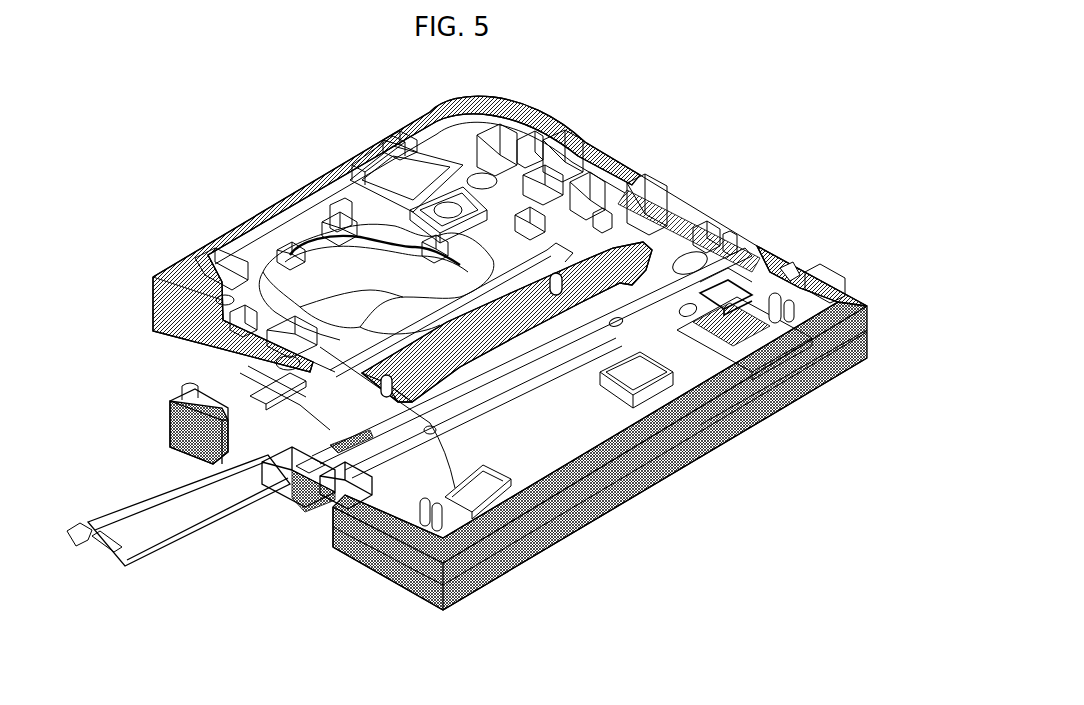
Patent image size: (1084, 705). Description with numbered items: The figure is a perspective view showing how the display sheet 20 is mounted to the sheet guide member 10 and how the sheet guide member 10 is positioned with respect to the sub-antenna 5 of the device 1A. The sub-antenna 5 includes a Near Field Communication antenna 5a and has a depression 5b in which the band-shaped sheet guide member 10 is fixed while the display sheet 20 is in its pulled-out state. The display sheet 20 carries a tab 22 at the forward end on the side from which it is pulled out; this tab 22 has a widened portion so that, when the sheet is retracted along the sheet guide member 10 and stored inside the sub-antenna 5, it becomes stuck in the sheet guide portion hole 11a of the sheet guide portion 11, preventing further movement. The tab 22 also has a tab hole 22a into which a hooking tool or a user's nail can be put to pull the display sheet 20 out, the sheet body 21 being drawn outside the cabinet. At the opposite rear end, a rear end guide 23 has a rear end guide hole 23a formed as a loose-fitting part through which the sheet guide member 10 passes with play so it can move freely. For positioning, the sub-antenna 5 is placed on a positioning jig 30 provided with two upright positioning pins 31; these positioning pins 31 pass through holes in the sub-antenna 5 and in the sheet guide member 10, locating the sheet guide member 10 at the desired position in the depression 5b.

The imaging unit 1A is at (770, 100).
The sub-antenna 5 is at (598, 162).
The Near Field Communication (NFC) antenna 5a is at (813, 388).
The depression 5b is at (673, 218).
The sheet guide member 10 is at (650, 258).
The sheet guide portion 11 is at (262, 474).
The sheet guide portion hole 11a is at (293, 474).
The display sheet 20 is at (330, 480).
The flexible cable with barcode 21 is at (183, 538).
The tab 22 is at (76, 542).
The tab hole 22a is at (113, 560).
The rear end guide 23 is at (413, 397).
The rear end guide hole 23a is at (520, 560).
The positioning jig 30 is at (808, 278).
The positioning pins 31 is at (275, 322).